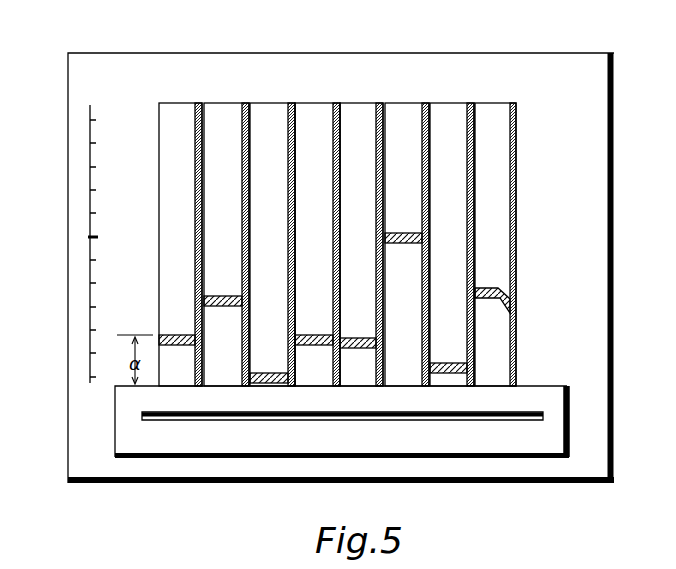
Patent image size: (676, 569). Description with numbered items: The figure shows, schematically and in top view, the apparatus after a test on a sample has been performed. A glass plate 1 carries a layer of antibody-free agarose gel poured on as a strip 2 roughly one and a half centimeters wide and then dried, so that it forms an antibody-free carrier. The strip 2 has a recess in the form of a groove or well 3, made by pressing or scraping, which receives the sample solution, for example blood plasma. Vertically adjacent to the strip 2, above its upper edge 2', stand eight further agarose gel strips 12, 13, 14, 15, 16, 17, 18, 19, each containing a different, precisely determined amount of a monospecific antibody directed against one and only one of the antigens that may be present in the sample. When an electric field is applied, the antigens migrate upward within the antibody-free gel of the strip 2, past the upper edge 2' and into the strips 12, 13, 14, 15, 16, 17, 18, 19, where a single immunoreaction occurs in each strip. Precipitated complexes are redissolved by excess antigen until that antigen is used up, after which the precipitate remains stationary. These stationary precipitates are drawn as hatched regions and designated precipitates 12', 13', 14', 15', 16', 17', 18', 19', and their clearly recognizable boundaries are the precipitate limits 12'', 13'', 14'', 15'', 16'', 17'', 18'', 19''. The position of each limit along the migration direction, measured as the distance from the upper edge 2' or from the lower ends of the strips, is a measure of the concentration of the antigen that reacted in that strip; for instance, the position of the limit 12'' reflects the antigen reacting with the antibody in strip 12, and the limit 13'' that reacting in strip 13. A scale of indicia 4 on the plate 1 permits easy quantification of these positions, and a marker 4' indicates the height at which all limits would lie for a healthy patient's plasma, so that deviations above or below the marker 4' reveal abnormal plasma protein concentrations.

The glass plate 1 is at (552, 78).
The strip 2 is at (342, 452).
The upper edge 2' is at (553, 389).
The well 3 is at (462, 420).
The scale of indicia 4 is at (62, 244).
The marker 4' is at (63, 260).
The strip 12 is at (180, 203).
The precipitate 12' is at (179, 315).
The precipitate limit 12'' is at (182, 244).
The strip 13 is at (226, 203).
The precipitate 13' is at (223, 275).
The precipitate limit 13'' is at (227, 244).
The strip 14 is at (272, 203).
The precipitate 14' is at (269, 360).
The precipitate limit 14'' is at (273, 244).
The strip 15 is at (317, 203).
The precipitate 15' is at (314, 319).
The precipitate limit 15'' is at (319, 244).
The strip 16 is at (361, 203).
The precipitate 16' is at (360, 317).
The precipitate limit 16'' is at (362, 244).
The strip 17 is at (407, 203).
The precipitate 17' is at (404, 216).
The precipitate limit 17'' is at (407, 244).
The strip 18 is at (452, 203).
The precipitate 18' is at (449, 347).
The precipitate limit 18'' is at (451, 244).
The strip 19 is at (497, 203).
The precipitate 19' is at (494, 283).
The precipitate limit 19'' is at (495, 244).